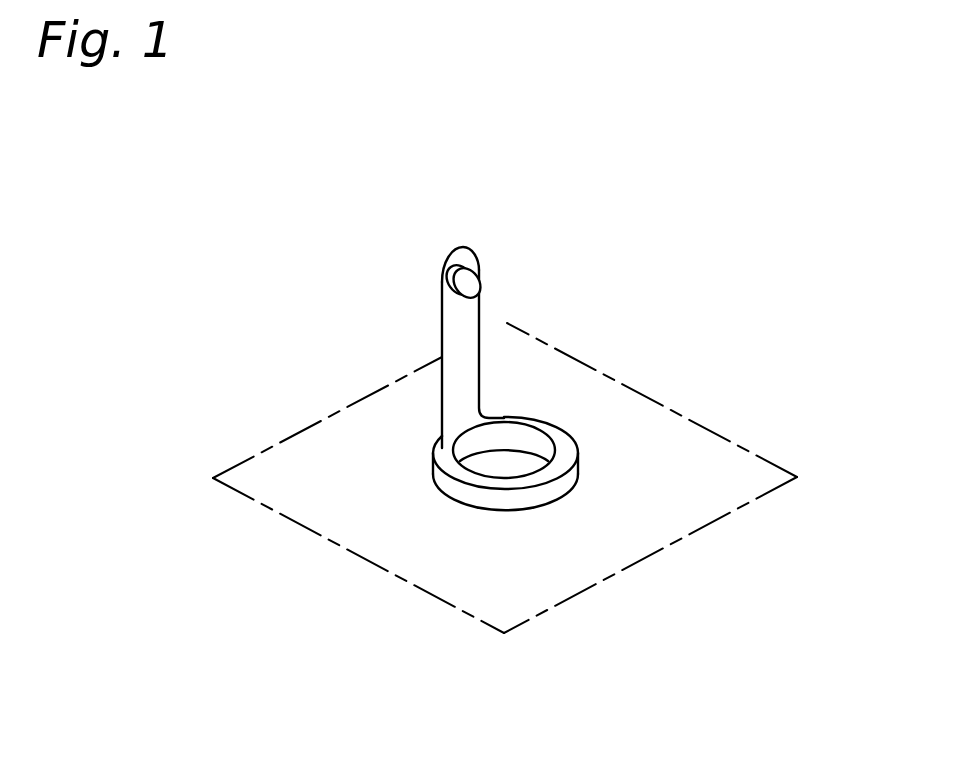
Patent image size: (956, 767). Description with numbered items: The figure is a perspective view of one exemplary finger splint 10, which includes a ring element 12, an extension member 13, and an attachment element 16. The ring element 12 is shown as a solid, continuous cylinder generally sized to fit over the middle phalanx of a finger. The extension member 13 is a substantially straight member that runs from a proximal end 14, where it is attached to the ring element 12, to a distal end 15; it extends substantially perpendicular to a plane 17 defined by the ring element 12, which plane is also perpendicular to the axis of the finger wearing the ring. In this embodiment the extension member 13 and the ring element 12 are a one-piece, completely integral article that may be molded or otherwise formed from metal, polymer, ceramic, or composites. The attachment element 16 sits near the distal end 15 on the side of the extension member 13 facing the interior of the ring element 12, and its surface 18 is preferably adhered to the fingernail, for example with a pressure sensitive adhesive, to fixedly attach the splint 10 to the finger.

The finger splint 10 is at (490, 322).
The ring element 12 is at (550, 423).
The extension member 13 is at (450, 338).
The proximal end 14 is at (440, 430).
The distal end 15 is at (460, 253).
The attachment element 16 is at (450, 275).
The plane 17 is at (703, 427).
The surface 18 is at (502, 281).